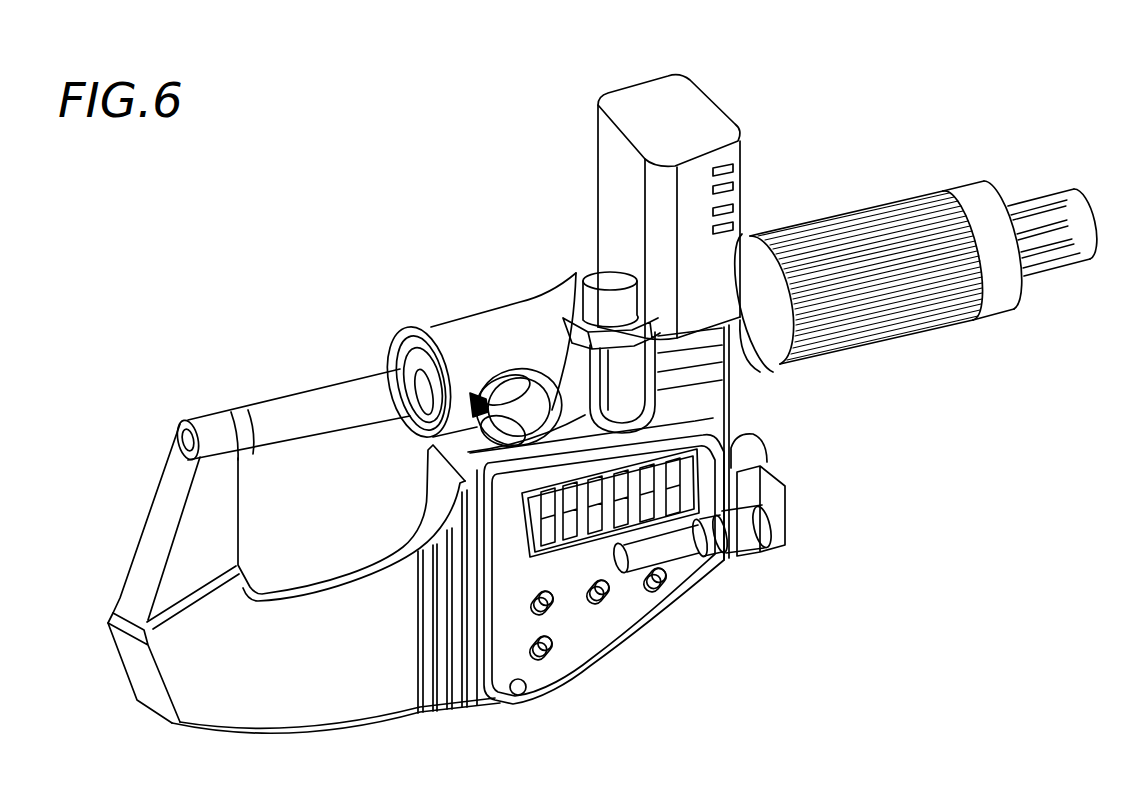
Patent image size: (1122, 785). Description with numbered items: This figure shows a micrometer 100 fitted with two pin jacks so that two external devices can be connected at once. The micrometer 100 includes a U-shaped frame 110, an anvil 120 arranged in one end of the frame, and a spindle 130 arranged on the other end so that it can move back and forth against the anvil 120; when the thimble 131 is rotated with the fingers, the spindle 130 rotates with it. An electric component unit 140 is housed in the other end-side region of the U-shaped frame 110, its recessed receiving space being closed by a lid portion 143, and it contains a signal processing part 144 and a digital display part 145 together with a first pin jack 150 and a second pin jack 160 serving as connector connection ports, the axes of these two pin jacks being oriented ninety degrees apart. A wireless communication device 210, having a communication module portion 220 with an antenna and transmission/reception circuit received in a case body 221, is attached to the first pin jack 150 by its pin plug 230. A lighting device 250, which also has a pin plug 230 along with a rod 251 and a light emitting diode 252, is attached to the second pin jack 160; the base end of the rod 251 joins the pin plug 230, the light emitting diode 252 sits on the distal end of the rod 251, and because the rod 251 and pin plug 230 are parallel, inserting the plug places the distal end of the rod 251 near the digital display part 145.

The micrometer 100 is at (341, 324).
The U-shaped frame 110 is at (240, 523).
The anvil 120 is at (242, 420).
The spindle 130 is at (287, 407).
The thimble 131 is at (917, 323).
The electric component unit 140 is at (725, 608).
The lid portion 143 is at (712, 420).
The signal processing part 144 is at (713, 403).
The digital display part 145 is at (587, 540).
The first pin jack 150 is at (583, 262).
The second pin jack 160 is at (733, 467).
The wireless communication device 210 is at (746, 98).
The communication module portion 220 is at (613, 185).
The case body 221 is at (627, 100).
The pin plug 230 is at (567, 292).
The lighting device 250 is at (813, 563).
The rod 251 is at (673, 548).
The light emitting diode 252 is at (617, 550).